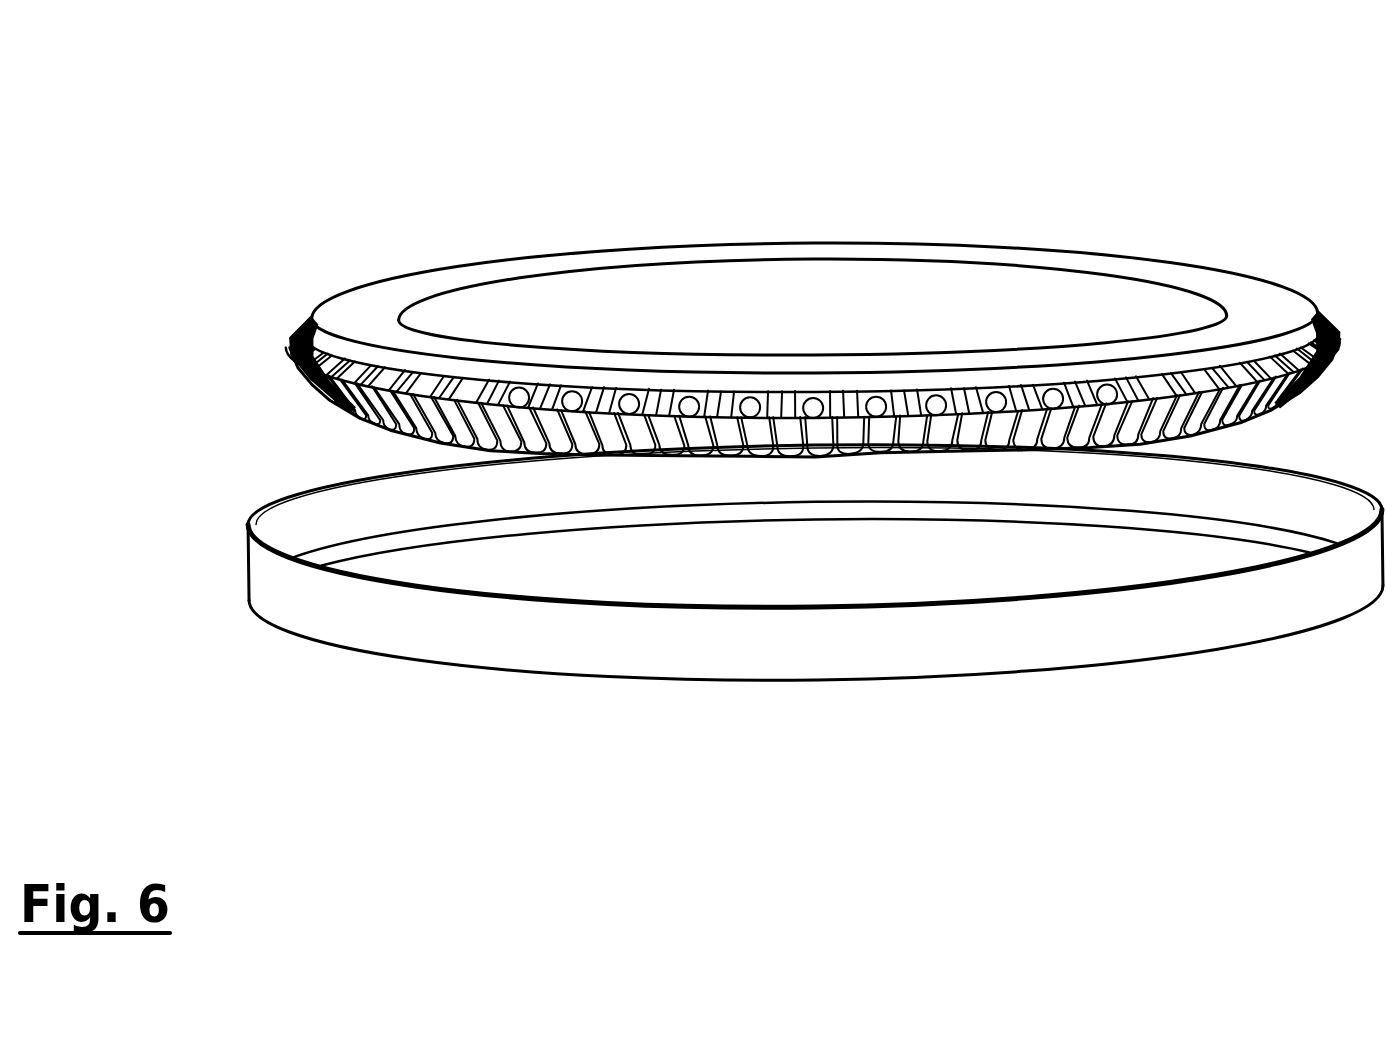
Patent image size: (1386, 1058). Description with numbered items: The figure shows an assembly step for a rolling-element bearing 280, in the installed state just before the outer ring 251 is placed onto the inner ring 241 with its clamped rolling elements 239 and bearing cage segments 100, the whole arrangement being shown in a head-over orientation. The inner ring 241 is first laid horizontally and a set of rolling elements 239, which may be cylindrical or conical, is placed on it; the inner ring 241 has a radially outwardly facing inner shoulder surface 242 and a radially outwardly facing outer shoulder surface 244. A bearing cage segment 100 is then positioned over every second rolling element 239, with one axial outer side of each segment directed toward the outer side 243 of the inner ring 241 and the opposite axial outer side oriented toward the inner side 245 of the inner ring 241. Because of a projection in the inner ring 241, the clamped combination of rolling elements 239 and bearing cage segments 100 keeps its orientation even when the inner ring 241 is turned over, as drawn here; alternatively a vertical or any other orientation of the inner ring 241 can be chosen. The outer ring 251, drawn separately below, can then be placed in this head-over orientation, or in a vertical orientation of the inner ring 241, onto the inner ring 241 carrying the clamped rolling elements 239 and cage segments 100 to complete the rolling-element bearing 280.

The rolling-element bearing 280 is at (1222, 175).
The inner ring 241 is at (366, 311).
The outer side 243 is at (315, 310).
The inner side 245 is at (415, 330).
The outer shoulder surface 244 is at (530, 380).
The rolling elements 239 is at (1052, 392).
The bearing cage segment 100 is at (856, 378).
The inner shoulder surface 242 is at (767, 456).
The outer ring 251 is at (420, 624).